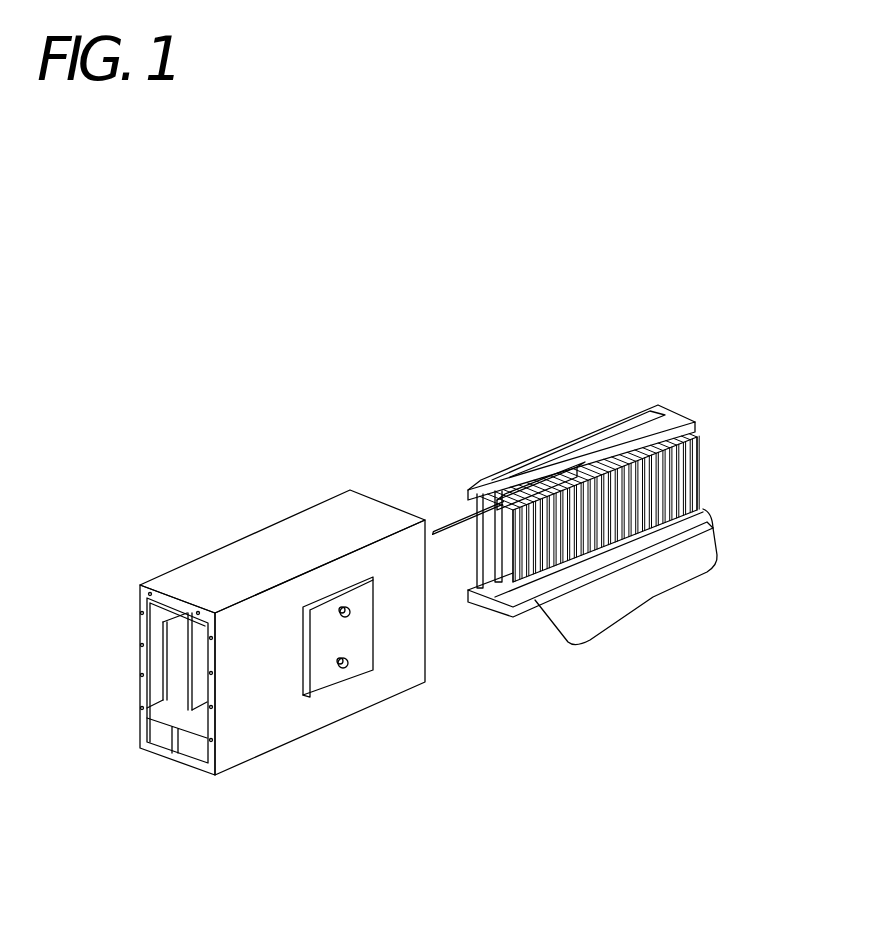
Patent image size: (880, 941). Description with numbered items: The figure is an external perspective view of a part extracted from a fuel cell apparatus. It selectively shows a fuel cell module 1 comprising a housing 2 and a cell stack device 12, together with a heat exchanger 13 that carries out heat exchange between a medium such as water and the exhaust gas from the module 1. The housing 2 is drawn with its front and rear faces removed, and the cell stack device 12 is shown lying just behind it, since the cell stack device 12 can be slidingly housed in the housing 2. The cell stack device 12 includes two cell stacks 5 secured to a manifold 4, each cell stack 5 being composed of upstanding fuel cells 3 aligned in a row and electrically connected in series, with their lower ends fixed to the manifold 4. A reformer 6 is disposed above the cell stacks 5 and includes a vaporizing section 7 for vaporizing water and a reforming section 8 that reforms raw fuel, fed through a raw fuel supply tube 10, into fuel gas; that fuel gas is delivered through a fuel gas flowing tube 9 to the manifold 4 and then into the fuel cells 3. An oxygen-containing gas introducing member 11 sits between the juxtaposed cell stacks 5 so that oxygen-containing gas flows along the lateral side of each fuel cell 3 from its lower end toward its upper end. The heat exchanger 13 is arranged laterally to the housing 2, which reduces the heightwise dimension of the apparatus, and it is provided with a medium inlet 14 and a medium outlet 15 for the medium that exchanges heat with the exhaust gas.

The fuel cell module 1 is at (235, 300).
The housing 2 is at (310, 517).
The fuel cell 3 is at (697, 453).
The manifold 4 is at (513, 613).
The cell stack 5 is at (653, 597).
The reformer 6 is at (478, 490).
The vaporizing section 7 is at (543, 487).
The reforming section 8 is at (668, 420).
The fuel gas flowing tube 9 is at (477, 510).
The raw fuel supply tube 10 is at (430, 517).
The oxygen-containing gas introducing member 11 is at (198, 636).
The cell stack device 12 is at (613, 404).
The heat exchanger 13 is at (323, 625).
The medium inlet 14 is at (340, 668).
The medium outlet 15 is at (337, 611).